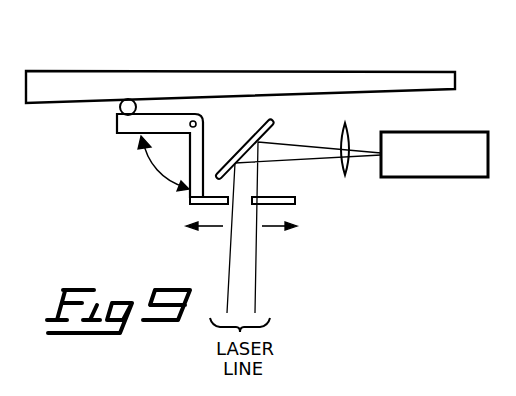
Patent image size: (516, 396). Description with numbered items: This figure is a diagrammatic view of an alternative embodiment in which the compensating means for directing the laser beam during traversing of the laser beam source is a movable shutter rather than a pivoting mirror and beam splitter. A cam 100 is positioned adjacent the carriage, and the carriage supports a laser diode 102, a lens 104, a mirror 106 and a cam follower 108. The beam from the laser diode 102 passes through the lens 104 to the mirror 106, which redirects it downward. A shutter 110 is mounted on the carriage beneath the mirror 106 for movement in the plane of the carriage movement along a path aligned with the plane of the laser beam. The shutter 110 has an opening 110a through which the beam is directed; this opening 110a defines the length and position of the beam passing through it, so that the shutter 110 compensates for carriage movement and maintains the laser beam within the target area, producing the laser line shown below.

The cam 100 is at (224, 71).
The laser diode 102 is at (451, 177).
The lens 104 is at (347, 130).
The mirror 106 is at (272, 128).
The cam follower 108 is at (190, 196).
The shutter 110 is at (215, 206).
The opening 110a is at (249, 207).